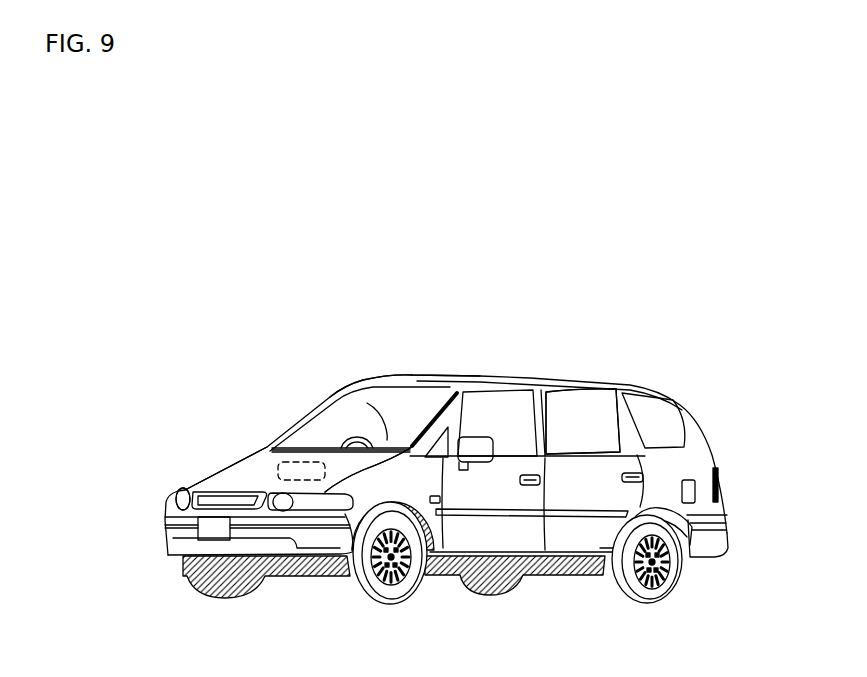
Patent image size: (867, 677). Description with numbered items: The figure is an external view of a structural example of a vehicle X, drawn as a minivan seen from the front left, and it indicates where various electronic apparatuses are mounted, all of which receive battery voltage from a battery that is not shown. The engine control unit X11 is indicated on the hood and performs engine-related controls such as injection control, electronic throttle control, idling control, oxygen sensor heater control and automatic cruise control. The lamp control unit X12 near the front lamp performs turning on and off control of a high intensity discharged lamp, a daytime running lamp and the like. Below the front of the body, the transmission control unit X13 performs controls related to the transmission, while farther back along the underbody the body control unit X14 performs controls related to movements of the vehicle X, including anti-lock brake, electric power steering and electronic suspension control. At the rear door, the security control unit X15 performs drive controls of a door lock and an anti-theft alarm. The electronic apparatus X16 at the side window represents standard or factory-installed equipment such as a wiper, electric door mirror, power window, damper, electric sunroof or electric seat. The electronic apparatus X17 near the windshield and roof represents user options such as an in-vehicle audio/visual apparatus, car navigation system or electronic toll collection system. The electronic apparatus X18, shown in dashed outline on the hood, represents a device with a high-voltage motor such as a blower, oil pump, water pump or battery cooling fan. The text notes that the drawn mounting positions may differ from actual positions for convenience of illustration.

The vehicle X is at (148, 333).
The engine control unit X11 is at (253, 470).
The lamp control unit X12 is at (175, 490).
The transmission control unit X13 is at (333, 574).
The body control unit X14 is at (600, 574).
The security control unit X15 is at (645, 483).
The electronic apparatus X16 is at (587, 406).
The electronic apparatus X17 is at (334, 398).
The electronic apparatus X18 is at (277, 461).